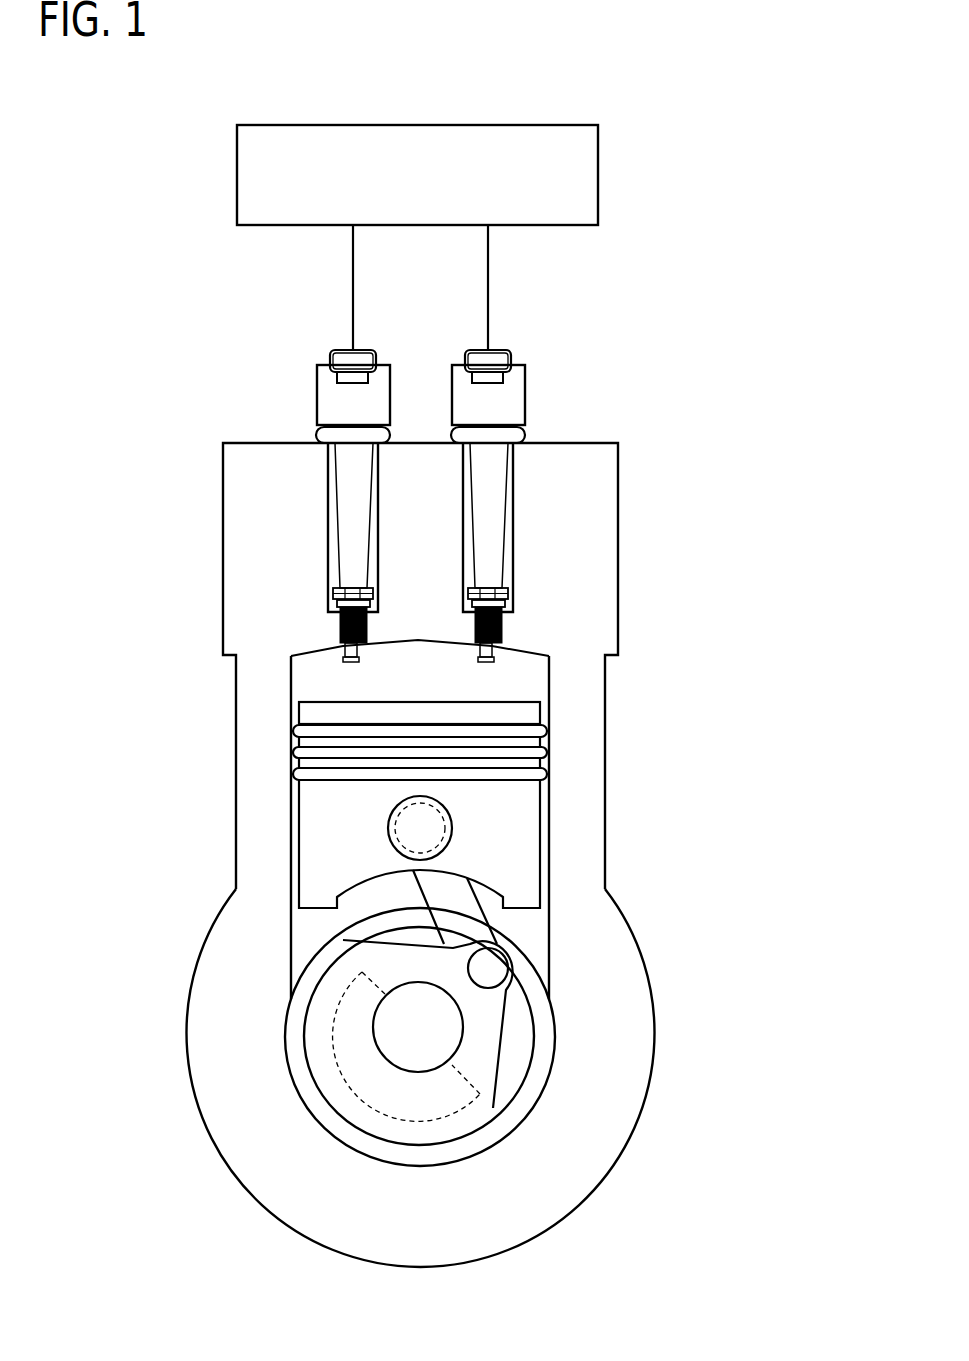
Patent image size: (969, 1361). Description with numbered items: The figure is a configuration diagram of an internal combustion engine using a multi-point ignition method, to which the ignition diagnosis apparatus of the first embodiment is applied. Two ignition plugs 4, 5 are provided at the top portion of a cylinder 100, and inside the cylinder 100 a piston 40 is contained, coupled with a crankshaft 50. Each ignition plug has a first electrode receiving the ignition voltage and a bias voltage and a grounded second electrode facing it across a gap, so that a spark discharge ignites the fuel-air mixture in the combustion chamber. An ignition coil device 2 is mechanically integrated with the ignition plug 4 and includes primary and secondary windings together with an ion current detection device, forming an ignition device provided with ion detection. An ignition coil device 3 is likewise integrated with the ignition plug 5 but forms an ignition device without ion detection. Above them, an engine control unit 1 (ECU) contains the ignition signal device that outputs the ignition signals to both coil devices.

The engine control unit 1 is at (414, 125).
The ignition coil device 2 is at (317, 395).
The ignition coil device 3 is at (525, 392).
The ignition plug 4 is at (340, 627).
The ignition plug 5 is at (510, 628).
The cylinder 100 is at (597, 630).
The piston 40 is at (515, 843).
The crankshaft 50 is at (418, 1023).